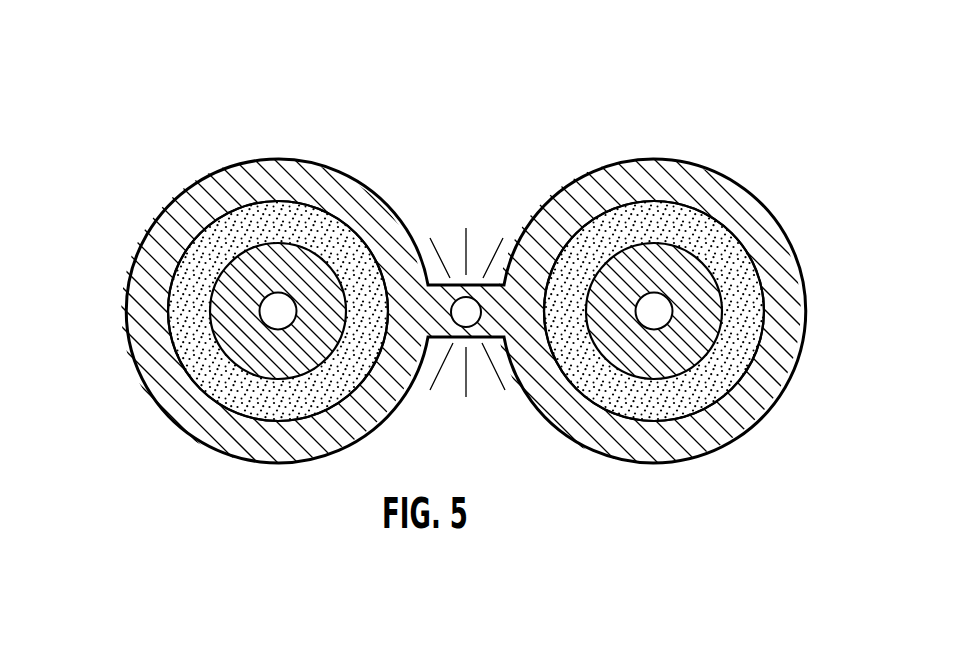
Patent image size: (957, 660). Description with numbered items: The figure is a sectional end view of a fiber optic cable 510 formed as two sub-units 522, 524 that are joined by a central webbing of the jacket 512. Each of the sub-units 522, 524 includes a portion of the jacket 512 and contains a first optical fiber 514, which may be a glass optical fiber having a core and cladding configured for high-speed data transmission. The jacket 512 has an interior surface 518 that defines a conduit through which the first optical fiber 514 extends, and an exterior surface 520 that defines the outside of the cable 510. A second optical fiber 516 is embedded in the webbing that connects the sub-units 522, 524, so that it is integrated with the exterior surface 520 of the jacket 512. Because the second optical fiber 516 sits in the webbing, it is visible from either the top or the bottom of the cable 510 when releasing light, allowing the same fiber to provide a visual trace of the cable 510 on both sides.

The fiber optic cable 510 is at (165, 99).
The jacket 512 is at (308, 183).
The first optical fiber 514 is at (278, 355).
The second optical fiber 516 is at (463, 322).
The interior surface 518 is at (332, 230).
The exterior surface 520 is at (337, 163).
The sub-unit 522 is at (151, 286).
The sub-unit 524 is at (790, 315).